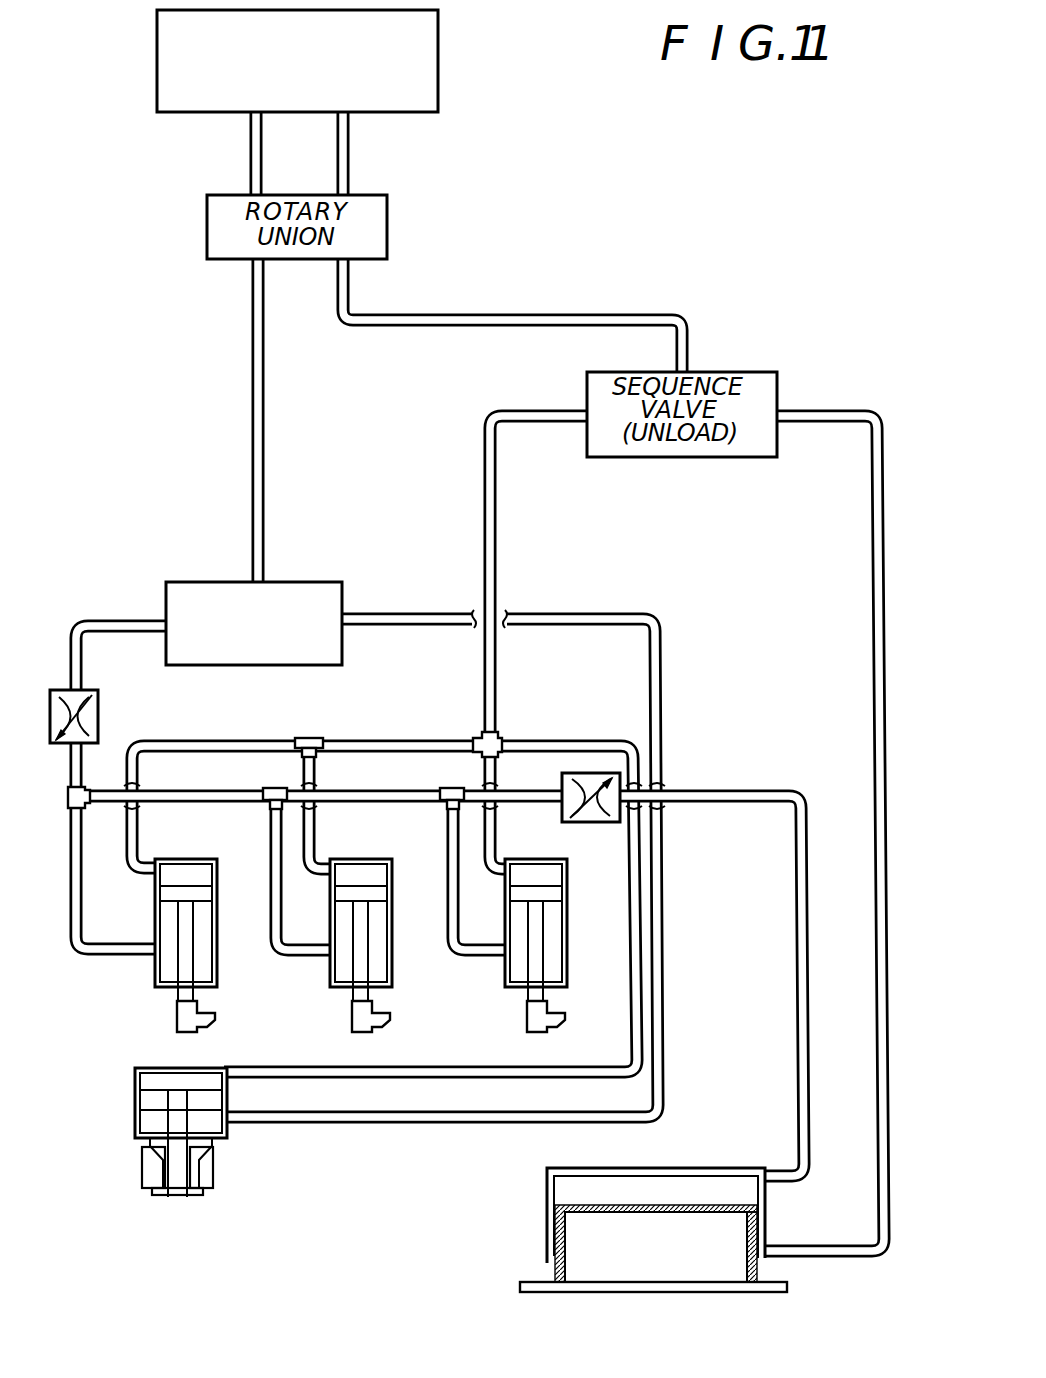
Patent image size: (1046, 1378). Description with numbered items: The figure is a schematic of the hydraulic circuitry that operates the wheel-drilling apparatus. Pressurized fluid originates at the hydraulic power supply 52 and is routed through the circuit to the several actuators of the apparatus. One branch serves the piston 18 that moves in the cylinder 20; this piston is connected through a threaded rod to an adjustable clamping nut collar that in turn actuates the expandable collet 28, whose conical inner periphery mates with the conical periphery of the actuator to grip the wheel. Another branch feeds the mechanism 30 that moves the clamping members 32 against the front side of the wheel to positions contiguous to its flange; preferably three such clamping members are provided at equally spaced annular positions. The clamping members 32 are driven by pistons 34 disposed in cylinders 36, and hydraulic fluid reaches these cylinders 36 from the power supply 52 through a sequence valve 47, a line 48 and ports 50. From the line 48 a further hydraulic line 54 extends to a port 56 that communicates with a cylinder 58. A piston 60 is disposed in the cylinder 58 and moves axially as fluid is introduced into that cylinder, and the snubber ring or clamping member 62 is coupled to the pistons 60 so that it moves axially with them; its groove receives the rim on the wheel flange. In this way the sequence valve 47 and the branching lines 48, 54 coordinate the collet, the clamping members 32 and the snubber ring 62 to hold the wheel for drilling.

The piston 18 is at (150, 1097).
The cylinder 20 is at (150, 1082).
The expandable collet 28 is at (150, 1172).
The mechanism 30 is at (140, 972).
The clamping members 32 is at (197, 1021).
The pistons 34 is at (175, 897).
The cylinders 36 is at (176, 872).
The sequence valve 47 is at (326, 656).
The line 48 is at (176, 792).
The ports 50 is at (340, 877).
The hydraulic power supply 52 is at (418, 50).
The hydraulic line 54 is at (712, 788).
The port 56 is at (735, 1178).
The cylinder 58 is at (560, 1195).
The piston 60 is at (553, 1237).
The snubber ring or clamping member 62 is at (525, 1288).